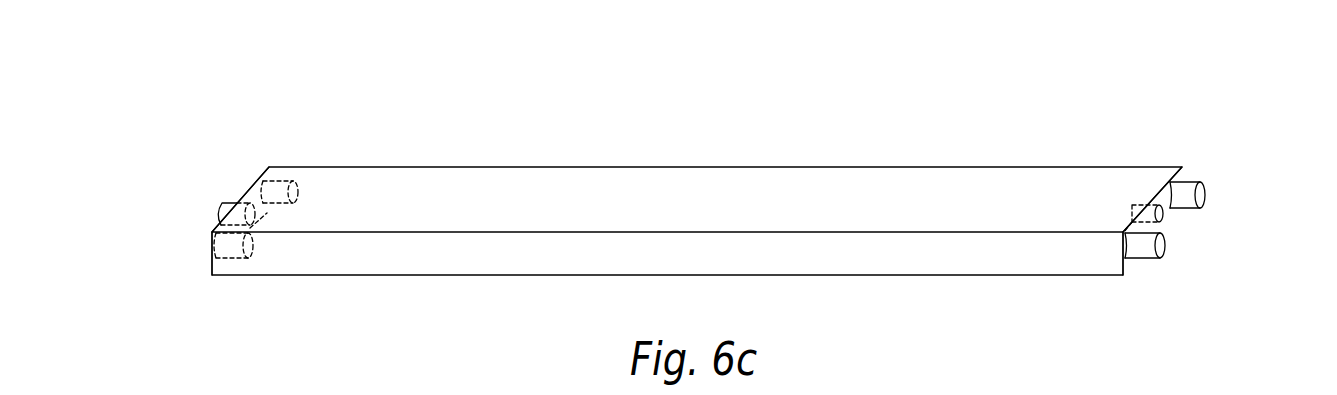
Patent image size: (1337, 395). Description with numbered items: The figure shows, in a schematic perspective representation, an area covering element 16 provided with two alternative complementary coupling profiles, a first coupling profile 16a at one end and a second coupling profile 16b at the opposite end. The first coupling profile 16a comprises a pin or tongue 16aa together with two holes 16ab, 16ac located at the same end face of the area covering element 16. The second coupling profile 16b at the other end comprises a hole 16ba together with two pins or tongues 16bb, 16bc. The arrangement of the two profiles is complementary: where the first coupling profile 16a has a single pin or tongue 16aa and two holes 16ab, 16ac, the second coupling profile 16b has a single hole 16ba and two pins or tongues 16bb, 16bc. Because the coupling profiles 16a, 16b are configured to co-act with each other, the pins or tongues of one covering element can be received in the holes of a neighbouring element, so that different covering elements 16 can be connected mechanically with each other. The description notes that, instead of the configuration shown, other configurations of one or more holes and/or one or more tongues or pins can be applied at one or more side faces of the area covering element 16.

The area covering element 16 is at (437, 146).
The first coupling profile 16a is at (156, 211).
The pin or tongue 16aa is at (220, 212).
The hole 16ab is at (264, 190).
The hole 16ac is at (217, 243).
The second coupling profile 16b is at (1220, 168).
The hole 16ba is at (1163, 215).
The pin or tongue 16bb is at (1205, 195).
The pin or tongue 16bc is at (1163, 247).